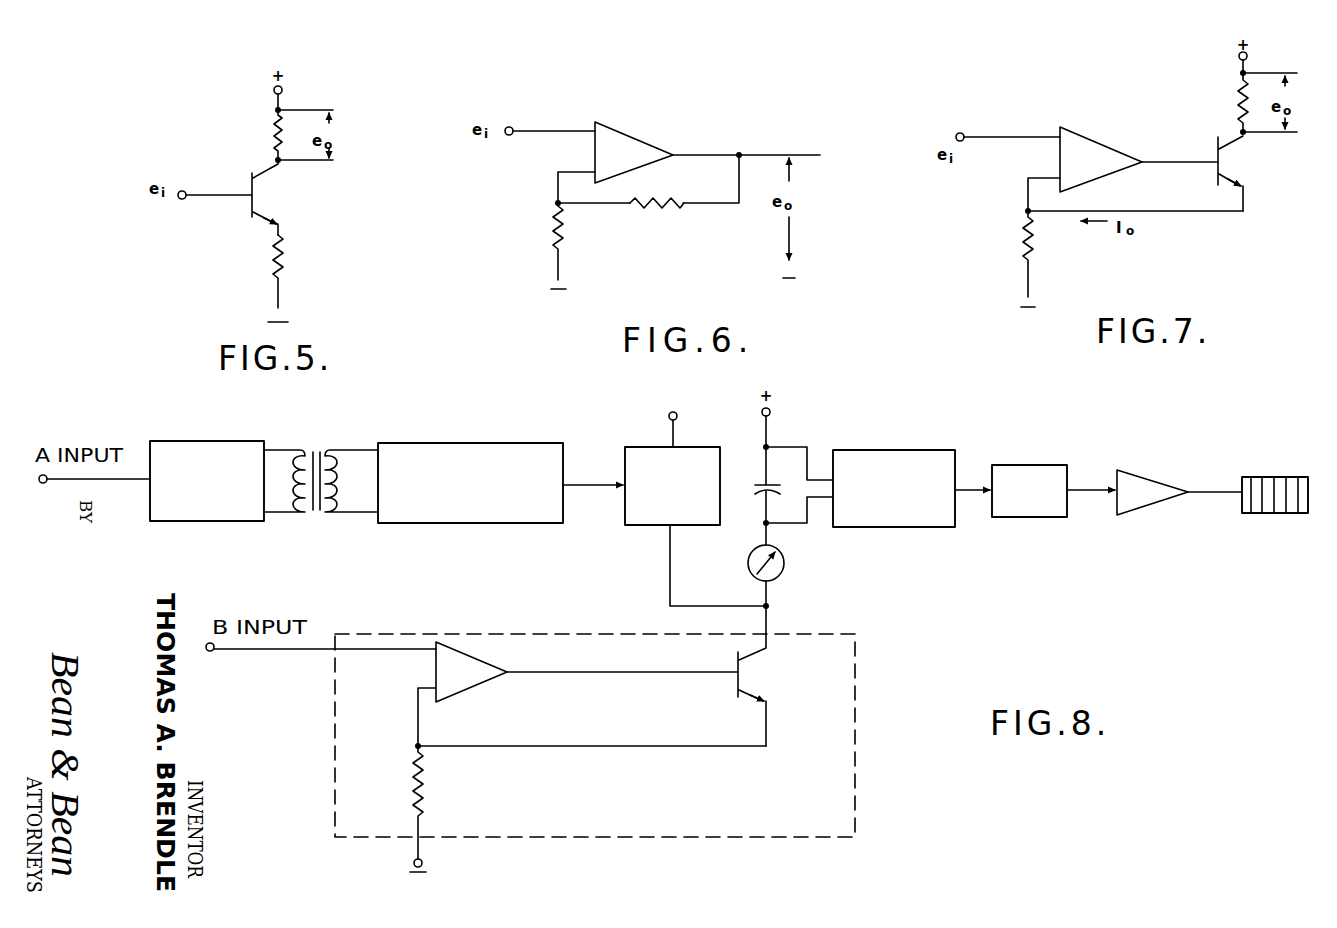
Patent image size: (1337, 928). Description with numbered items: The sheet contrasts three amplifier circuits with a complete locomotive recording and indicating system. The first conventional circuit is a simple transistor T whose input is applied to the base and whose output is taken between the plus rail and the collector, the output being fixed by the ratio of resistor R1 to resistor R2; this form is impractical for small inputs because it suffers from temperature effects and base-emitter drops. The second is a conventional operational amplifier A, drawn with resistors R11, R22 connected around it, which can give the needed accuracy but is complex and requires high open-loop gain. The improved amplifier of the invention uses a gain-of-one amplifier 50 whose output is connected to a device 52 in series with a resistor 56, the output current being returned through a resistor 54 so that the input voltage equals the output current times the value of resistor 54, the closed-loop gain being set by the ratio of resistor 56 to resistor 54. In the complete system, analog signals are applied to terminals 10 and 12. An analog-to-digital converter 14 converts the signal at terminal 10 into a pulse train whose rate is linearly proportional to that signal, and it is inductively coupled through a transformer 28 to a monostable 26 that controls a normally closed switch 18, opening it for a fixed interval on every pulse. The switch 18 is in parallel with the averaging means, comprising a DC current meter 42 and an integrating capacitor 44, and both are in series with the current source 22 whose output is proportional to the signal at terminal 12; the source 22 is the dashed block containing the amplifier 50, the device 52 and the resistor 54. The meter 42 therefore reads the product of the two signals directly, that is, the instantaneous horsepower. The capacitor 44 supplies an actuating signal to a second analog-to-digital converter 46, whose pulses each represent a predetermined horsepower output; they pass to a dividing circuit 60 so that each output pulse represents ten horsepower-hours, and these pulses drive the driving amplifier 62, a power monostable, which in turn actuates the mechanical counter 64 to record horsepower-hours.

In FIG. 8, the terminal 10 is at (41, 483).
In FIG. 7, the terminal 12 is at (962, 132).
In FIG. 8, the terminal 12 is at (213, 652).
In FIG. 8, the analog-to-digital converter 14 is at (212, 441).
In FIG. 8, the normally closed switch 18 is at (697, 447).
In FIG. 8, the current or voltage source 22 is at (545, 632).
In FIG. 8, the monostable multivibrator 26 is at (462, 443).
In FIG. 8, the transformer 28 is at (324, 447).
In FIG. 8, the DC current meter 42 is at (784, 564).
In FIG. 8, the integrating capacitor 44 is at (762, 496).
In FIG. 8, the analog-to-digital converter 46 is at (893, 450).
In FIG. 7, the amplifier 50 is at (1090, 150).
In FIG. 8, the amplifier 50 is at (478, 668).
In FIG. 7, the transistor 52 is at (1236, 160).
In FIG. 8, the transistor 52 is at (757, 672).
In FIG. 7, the resistor 54 is at (1022, 232).
In FIG. 8, the resistor 54 is at (428, 797).
In FIG. 7, the resistor 56 is at (1238, 90).
In FIG. 8, the dividing circuit 60 is at (1027, 518).
In FIG. 8, the driving amplifier 62 is at (1143, 507).
In FIG. 8, the mechanical counter 64 is at (1254, 513).
In FIG. 5, the transistor T is at (271, 196).
In FIG. 5, the resistor R1 is at (271, 134).
In FIG. 5, the resistor R2 is at (282, 250).
In FIG. 6, the operational amplifier A is at (621, 146).
In FIG. 6, the feedback resistor R11 is at (640, 200).
In FIG. 6, the input resistor R22 is at (572, 229).